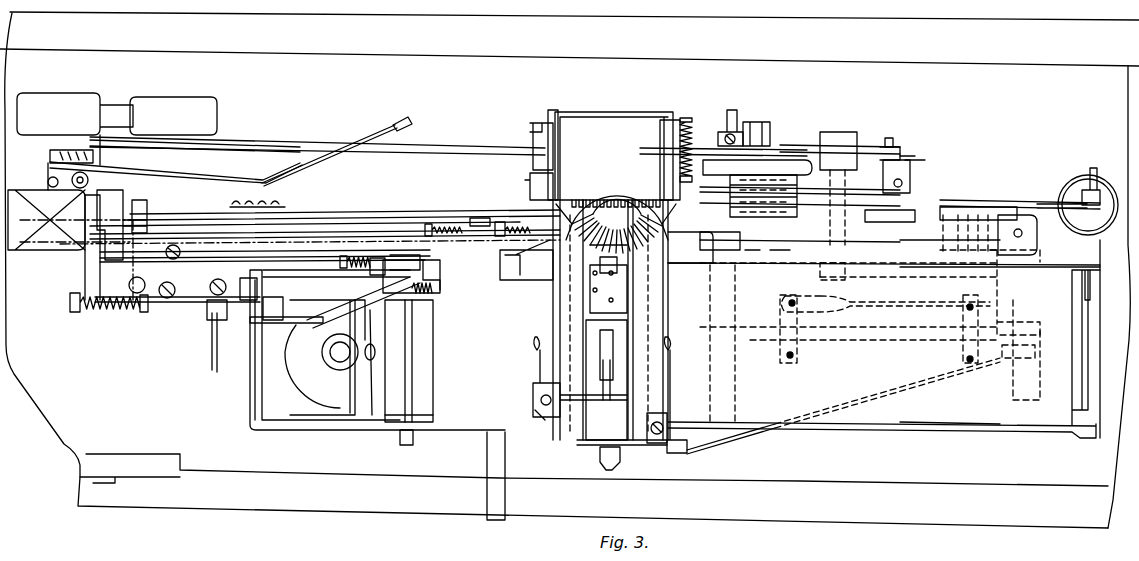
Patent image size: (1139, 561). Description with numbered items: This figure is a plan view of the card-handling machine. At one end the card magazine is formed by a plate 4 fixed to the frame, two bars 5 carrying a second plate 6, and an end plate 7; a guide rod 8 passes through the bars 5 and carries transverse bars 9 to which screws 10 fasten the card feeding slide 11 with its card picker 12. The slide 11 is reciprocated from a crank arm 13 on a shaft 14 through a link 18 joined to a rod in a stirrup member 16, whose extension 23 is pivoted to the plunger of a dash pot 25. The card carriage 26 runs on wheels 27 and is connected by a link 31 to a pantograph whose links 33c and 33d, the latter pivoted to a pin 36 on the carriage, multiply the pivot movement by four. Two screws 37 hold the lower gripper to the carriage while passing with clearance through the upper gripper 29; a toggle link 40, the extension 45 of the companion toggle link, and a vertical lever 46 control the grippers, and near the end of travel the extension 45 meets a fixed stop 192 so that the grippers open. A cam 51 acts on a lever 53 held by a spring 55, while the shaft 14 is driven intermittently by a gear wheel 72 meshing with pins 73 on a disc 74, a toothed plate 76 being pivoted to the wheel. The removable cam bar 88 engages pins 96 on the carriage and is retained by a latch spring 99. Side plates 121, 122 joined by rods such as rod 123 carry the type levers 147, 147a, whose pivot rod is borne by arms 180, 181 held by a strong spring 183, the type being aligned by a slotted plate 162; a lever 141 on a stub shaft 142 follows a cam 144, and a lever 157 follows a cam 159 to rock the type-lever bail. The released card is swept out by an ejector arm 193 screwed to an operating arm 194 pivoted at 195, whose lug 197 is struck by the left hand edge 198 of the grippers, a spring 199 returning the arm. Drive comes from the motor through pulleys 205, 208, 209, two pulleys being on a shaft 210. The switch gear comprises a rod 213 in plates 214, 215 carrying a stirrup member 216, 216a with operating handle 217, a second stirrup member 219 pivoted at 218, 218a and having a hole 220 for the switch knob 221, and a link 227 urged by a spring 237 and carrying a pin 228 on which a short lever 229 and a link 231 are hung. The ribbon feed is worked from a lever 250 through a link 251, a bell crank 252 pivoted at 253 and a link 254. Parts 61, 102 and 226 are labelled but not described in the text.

The plate 4 is at (927, 258).
The bars 5 is at (727, 300).
The plate 6 is at (906, 425).
The plate 7 is at (1100, 300).
The guide rod 8 is at (880, 340).
The transverse bars 9 is at (798, 350).
The screws 10 is at (790, 360).
The card feeding slide 11 is at (941, 420).
The card picker 12 is at (1085, 343).
The crank arm 13 is at (820, 272).
The shaft 14 is at (835, 135).
The stirrup member 16 is at (980, 205).
The link 18 is at (886, 297).
The extension 23 is at (1045, 203).
The dash pot 25 is at (1096, 185).
The carriage 26 is at (383, 140).
The wheels 27 is at (270, 208).
The upper gripper 29 is at (248, 302).
The link 31 is at (480, 217).
The pantograph link 33c is at (225, 190).
The pantograph link 33d is at (170, 188).
The pin 36 is at (148, 212).
The screws 37 is at (178, 253).
The toggle link 40 is at (210, 318).
The extension 45 is at (190, 303).
The vertical lever 46 is at (222, 275).
The cam 51 is at (782, 250).
The lever 53 is at (690, 249).
The spring 55 is at (840, 210).
The spring 61 is at (490, 225).
The gear wheel 72 is at (900, 150).
The pins 73 is at (752, 160).
The disc 74 is at (765, 122).
The plate 76 is at (892, 145).
The cam bar 88 is at (300, 225).
The pins 96 is at (48, 195).
The spring 99 is at (448, 225).
The bracket 102 is at (535, 185).
The side plate 121 is at (670, 120).
The side plate 122 is at (552, 110).
The rod 123 is at (572, 112).
The lever 141 is at (890, 227).
The stub shaft 142 is at (915, 156).
The cam 144 is at (750, 250).
The type lever 147 is at (628, 215).
The type lever 147a is at (580, 212).
The lever 157 is at (860, 170).
The cam 159 is at (720, 249).
The plate 162 is at (590, 271).
The arm 180 is at (540, 150).
The arm 181 is at (660, 185).
The spring 183 is at (690, 118).
The fixed stop 192 is at (108, 312).
The ejector arm 193 is at (280, 170).
The operating arm 194 is at (45, 245).
The pivot 195 is at (80, 170).
The lug 197 is at (105, 262).
The left hand edge 198 is at (165, 298).
The spring 199 is at (48, 190).
The pulley 205 is at (700, 148).
The pulley 208 is at (790, 145).
The pulley 209 is at (815, 187).
The shaft 210 is at (732, 110).
The rod 213 is at (408, 395).
The plate 214 is at (420, 420).
The plate 215 is at (440, 282).
The stirrup member arm 216 is at (280, 430).
The stirrup member arm 216a is at (340, 250).
The operating handle 217 is at (505, 513).
The pivot 218 is at (335, 410).
The pivot 218a is at (300, 277).
The stirrup member 219 is at (390, 370).
The hole 220 is at (380, 355).
The operating knob 221 is at (376, 350).
The spring 226 is at (420, 290).
The link 227 is at (335, 298).
The pin 228 is at (262, 325).
The short lever 229 is at (296, 324).
The link 231 is at (368, 324).
The spring 237 is at (395, 262).
The lever 250 is at (1020, 358).
The link 251 is at (755, 437).
The bell crank 252 is at (645, 447).
The pivot 253 is at (690, 447).
The link 254 is at (600, 458).